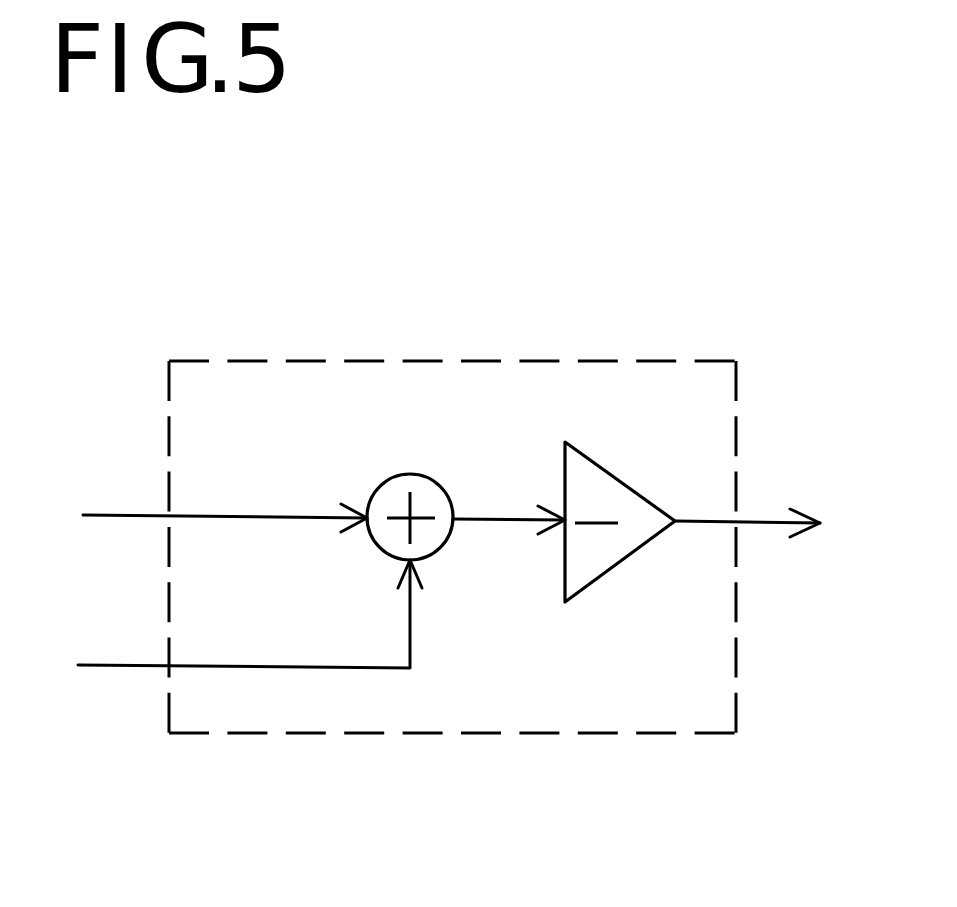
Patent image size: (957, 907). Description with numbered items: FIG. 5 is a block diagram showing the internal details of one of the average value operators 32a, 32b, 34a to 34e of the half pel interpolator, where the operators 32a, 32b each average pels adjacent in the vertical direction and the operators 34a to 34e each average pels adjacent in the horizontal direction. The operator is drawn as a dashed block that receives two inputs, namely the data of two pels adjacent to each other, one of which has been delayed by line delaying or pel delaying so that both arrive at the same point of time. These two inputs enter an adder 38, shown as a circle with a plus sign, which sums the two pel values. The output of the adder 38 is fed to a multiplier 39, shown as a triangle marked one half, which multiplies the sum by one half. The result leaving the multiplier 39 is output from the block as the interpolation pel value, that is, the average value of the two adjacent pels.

The average value operator 32a is at (537, 419).
The average value operator 32b is at (537, 419).
The average value operator 34a is at (537, 419).
The average value operator 34e is at (480, 362).
The adder 38 is at (375, 490).
The multiplier 39 is at (607, 573).